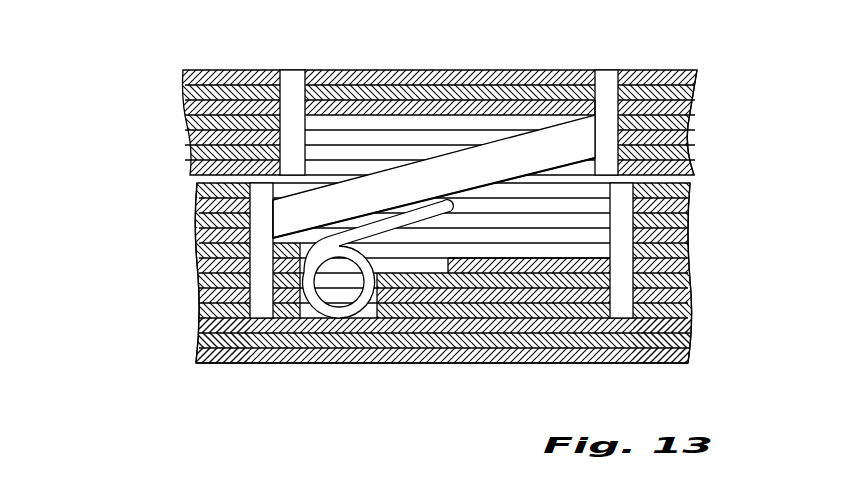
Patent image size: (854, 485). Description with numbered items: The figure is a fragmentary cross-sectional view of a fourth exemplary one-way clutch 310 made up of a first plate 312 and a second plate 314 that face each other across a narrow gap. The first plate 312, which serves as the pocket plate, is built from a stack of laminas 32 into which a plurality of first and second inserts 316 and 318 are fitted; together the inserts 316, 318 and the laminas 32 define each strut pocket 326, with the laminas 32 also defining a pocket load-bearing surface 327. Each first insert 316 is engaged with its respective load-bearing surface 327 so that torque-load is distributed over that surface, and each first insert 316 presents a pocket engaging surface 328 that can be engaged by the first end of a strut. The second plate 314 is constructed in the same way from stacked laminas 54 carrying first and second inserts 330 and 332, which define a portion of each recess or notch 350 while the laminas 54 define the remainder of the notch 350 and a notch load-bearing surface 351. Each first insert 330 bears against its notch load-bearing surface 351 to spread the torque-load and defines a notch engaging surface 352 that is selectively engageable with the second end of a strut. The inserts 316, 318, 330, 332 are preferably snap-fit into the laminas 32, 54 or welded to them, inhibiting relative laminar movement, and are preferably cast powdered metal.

The one-way clutch 310 is at (701, 167).
The first plate 312 is at (181, 333).
The second plate 314 is at (128, 93).
The first insert 316 is at (262, 318).
The second insert 318 is at (655, 363).
The strut pocket 326 is at (522, 262).
The pocket load-bearing surface 327 is at (256, 258).
The pocket engaging surface 328 is at (278, 217).
The first insert 330 is at (604, 70).
The second insert 332 is at (288, 70).
The notch 350 is at (376, 114).
The notch load-bearing surface 351 is at (595, 105).
The notch engaging surface 352 is at (595, 135).
The lamina 32 is at (197, 195).
The lamina 54 is at (697, 93).